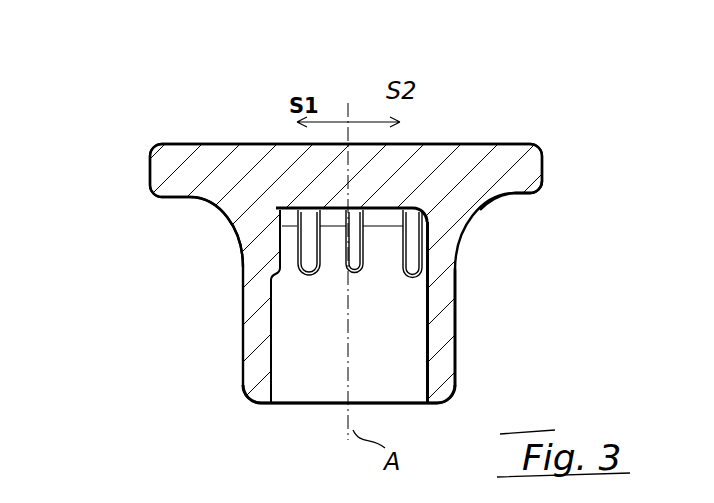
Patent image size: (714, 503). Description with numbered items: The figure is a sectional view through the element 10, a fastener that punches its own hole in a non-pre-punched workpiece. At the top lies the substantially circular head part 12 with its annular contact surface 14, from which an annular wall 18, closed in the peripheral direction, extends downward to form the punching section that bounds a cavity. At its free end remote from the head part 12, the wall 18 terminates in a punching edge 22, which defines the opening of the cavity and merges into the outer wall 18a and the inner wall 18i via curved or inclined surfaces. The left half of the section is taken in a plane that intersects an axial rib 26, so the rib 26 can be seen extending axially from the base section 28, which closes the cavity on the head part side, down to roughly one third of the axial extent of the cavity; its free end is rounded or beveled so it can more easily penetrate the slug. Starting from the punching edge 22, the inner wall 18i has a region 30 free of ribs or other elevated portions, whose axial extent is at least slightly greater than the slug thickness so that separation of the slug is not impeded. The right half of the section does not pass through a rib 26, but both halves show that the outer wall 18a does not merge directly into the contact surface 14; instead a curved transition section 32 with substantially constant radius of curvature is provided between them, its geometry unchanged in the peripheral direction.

The element 10 is at (528, 116).
The head part 12 is at (545, 164).
The contact surface 14 is at (520, 196).
The annular wall 18 is at (440, 305).
The outer wall 18a is at (457, 287).
The inner wall 18i is at (428, 381).
The punching edge 22 is at (270, 408).
The axial rib 26 is at (308, 262).
The base section 28 is at (300, 208).
The region free of elevated portions 30 is at (283, 346).
The transition section 32 is at (229, 231).